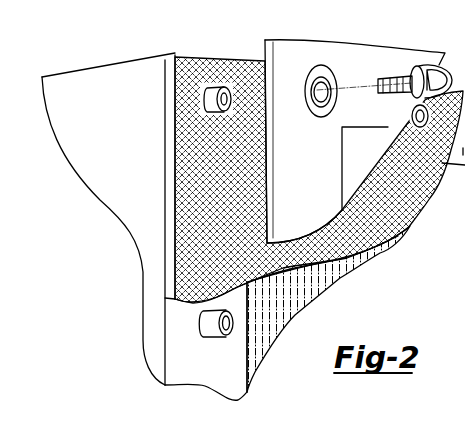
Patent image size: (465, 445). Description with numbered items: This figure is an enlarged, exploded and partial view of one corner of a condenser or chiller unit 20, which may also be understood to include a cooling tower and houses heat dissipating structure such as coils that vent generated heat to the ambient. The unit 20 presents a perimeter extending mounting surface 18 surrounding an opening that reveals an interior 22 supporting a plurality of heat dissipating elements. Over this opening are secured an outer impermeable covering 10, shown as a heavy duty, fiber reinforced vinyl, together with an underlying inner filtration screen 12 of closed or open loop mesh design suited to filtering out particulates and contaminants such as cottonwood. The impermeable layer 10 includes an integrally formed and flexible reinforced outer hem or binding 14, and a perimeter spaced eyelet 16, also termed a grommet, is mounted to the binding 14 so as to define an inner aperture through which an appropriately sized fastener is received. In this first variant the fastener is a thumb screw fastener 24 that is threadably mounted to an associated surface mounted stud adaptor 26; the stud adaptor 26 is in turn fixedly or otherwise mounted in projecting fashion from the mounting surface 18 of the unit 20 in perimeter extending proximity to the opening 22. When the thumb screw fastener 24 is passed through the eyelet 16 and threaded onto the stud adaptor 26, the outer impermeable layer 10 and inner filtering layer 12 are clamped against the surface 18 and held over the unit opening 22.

The impermeable covering 10 is at (355, 157).
The filtration screen 12 is at (349, 237).
The reinforced outer binding 14 is at (347, 60).
The eyelet 16 is at (330, 72).
The perimeter extending surface 18 is at (227, 360).
The condenser or chiller unit 20 is at (113, 183).
The interior 22 is at (287, 294).
The thumb screw fastener 24 is at (434, 68).
The stud adaptor 26 is at (212, 98).